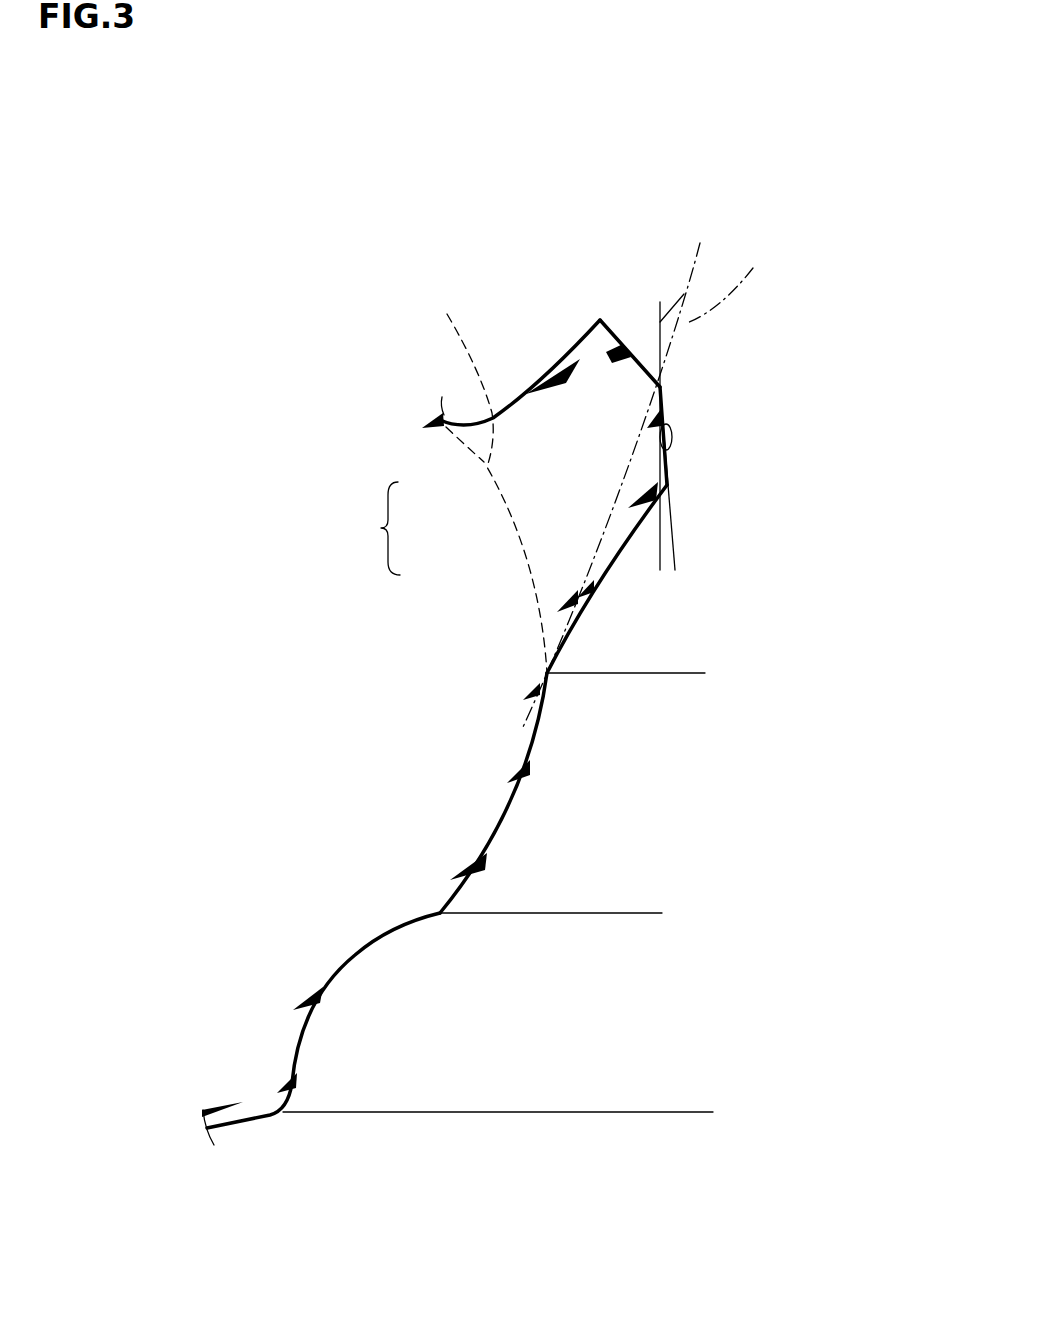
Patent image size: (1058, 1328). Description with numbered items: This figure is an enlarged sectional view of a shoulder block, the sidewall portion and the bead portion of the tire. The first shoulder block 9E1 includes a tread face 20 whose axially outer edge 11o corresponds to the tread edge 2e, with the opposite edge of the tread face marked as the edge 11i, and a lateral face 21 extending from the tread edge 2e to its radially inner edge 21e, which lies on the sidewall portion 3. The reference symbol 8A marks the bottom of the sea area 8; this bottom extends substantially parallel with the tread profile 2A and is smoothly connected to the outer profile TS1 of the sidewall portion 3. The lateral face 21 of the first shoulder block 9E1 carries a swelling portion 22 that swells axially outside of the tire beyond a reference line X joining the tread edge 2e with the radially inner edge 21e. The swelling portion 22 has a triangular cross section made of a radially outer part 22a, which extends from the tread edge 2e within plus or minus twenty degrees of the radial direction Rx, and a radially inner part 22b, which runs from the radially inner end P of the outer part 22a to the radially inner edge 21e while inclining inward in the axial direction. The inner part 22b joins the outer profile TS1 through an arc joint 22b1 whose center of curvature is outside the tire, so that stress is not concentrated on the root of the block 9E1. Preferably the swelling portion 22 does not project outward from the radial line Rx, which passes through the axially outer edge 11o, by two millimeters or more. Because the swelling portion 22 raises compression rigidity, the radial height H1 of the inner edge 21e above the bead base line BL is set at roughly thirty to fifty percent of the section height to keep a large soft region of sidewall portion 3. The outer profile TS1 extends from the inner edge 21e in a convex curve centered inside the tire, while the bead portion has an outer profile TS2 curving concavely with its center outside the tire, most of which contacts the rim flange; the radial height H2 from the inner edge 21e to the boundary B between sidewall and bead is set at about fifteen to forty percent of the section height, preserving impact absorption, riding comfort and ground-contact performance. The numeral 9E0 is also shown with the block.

The tread face 20 is at (650, 277).
The tread profile 2A is at (613, 327).
The inner edge 11i is at (600, 320).
The axially outer edge 11o is at (760, 436).
The tread edge 2e is at (662, 387).
The radial line Rx is at (618, 470).
The reference line X is at (713, 282).
The bottom of sea area 8A is at (470, 479).
The sea area 8 is at (470, 479).
The first shoulder block 9E1 is at (788, 443).
The sidewall rubber end 9E0 is at (695, 440).
The radially inner end of the outer part P is at (668, 485).
The swelling portion 22 is at (505, 530).
The radially outer part 22a is at (662, 450).
The radially inner part 22b is at (617, 553).
The arc joint 22b1 is at (550, 650).
The lateral face 21 is at (593, 595).
The radially inner edge 21e is at (547, 673).
The outer profile of the sidewall portion TS1 is at (517, 795).
The outer profile of the bead portion TS2 is at (358, 950).
The sidewall portion 3 is at (502, 856).
The boundary B is at (440, 913).
The bead base line BL is at (478, 1113).
The radial height H1 is at (703, 673).
The radial height H2 is at (658, 673).